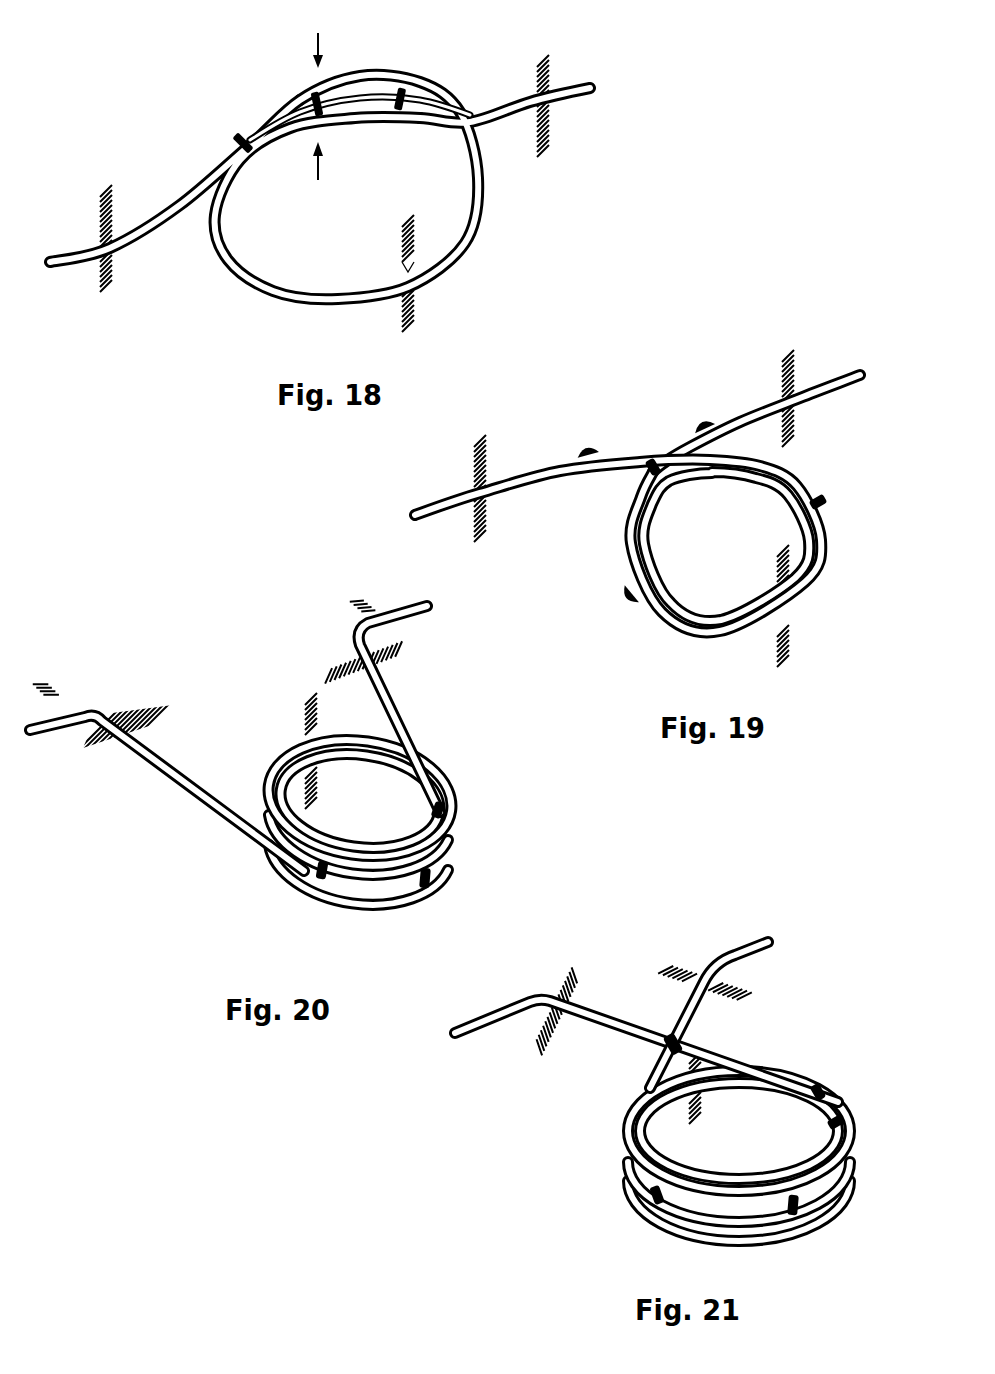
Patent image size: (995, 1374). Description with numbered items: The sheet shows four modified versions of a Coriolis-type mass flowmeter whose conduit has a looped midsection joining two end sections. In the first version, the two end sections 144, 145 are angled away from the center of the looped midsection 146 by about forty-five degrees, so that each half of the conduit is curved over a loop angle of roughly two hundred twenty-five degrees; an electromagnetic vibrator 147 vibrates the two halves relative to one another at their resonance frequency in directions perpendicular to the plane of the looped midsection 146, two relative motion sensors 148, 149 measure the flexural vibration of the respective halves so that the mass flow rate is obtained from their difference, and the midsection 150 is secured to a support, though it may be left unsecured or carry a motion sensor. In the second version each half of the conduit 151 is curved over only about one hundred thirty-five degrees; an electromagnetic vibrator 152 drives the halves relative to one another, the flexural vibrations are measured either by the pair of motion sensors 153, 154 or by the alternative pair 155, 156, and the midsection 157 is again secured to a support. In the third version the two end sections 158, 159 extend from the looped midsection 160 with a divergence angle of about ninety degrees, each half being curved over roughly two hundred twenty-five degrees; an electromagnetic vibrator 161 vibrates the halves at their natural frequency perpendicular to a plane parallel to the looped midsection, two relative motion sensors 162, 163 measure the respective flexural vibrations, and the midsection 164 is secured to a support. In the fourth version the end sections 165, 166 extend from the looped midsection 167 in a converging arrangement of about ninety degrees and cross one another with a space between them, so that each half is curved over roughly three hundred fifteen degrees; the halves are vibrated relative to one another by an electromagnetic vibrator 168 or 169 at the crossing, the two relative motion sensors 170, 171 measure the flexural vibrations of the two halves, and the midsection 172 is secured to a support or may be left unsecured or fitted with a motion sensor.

In FIG. 18, the end section 144 is at (175, 195).
In FIG. 18, the end section 145 is at (500, 107).
In FIG. 18, the looped midsection 146 is at (250, 288).
In FIG. 18, the electromagnetic vibrator 147 is at (300, 106).
In FIG. 18, the relative motion sensor 148 is at (238, 148).
In FIG. 18, the relative motion sensor 149 is at (400, 96).
In FIG. 18, the midsection 150 is at (418, 282).
In FIG. 19, the conduit 151 is at (625, 550).
In FIG. 19, the electromagnetic vibrator 152 is at (648, 476).
In FIG. 19, the motion sensor 153 is at (622, 600).
In FIG. 19, the motion sensor 154 is at (832, 504).
In FIG. 19, the motion sensor 155 is at (586, 443).
In FIG. 19, the motion sensor 156 is at (703, 418).
In FIG. 19, the midsection 157 is at (792, 612).
In FIG. 20, the end section 158 is at (198, 795).
In FIG. 20, the end section 159 is at (398, 703).
In FIG. 20, the looped midsection 160 is at (462, 868).
In FIG. 20, the electromagnetic vibrator 161 is at (422, 884).
In FIG. 20, the relative motion sensor 162 is at (318, 878).
In FIG. 20, the relative motion sensor 163 is at (436, 808).
In FIG. 20, the midsection 164 is at (303, 738).
In FIG. 21, the end section 165 is at (588, 1040).
In FIG. 21, the end section 166 is at (712, 1008).
In FIG. 21, the looped midsection 167 is at (665, 1020).
In FIG. 21, the electromagnetic vibrator 168 is at (790, 1215).
In FIG. 21, the electromagnetic vibrator 169 is at (668, 1050).
In FIG. 21, the relative motion sensor 170 is at (650, 1198).
In FIG. 21, the relative motion sensor 171 is at (840, 1118).
In FIG. 21, the midsection 172 is at (778, 1060).